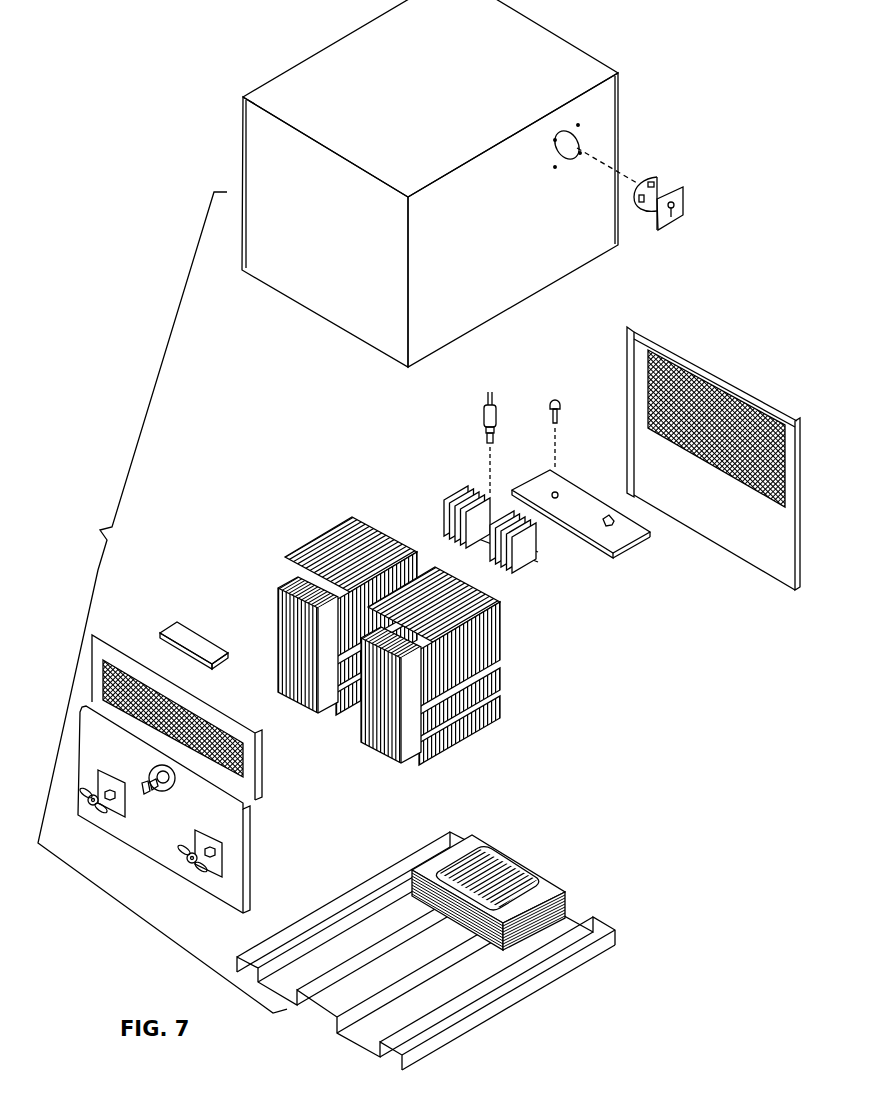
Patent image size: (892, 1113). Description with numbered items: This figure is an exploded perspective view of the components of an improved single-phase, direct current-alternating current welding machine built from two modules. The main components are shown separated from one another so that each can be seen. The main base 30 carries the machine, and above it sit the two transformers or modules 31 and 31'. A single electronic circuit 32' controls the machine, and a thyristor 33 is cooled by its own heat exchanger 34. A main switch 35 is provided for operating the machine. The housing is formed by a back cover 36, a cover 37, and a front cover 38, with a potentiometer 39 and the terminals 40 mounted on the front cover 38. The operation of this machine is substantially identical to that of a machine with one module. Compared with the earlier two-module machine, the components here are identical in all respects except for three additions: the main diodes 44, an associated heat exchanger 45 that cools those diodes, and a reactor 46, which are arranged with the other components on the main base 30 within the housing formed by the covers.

The main base 30 is at (426, 951).
The transformer 31 is at (347, 583).
The transformer 31' is at (450, 633).
The electronic circuit 32' is at (194, 638).
The thyristor 33 is at (484, 427).
The heat exchanger 34 is at (479, 527).
The main switch 35 is at (652, 188).
The back cover 36 is at (716, 452).
The cover 37 is at (439, 183).
The front cover 38 is at (164, 809).
The potentiometer 39 is at (177, 789).
The terminals 40 is at (150, 827).
The main diodes 44 is at (572, 435).
The heat exchanger 45 is at (581, 514).
The reactor 46 is at (488, 878).